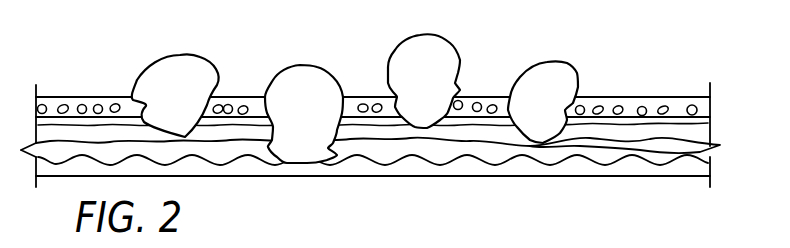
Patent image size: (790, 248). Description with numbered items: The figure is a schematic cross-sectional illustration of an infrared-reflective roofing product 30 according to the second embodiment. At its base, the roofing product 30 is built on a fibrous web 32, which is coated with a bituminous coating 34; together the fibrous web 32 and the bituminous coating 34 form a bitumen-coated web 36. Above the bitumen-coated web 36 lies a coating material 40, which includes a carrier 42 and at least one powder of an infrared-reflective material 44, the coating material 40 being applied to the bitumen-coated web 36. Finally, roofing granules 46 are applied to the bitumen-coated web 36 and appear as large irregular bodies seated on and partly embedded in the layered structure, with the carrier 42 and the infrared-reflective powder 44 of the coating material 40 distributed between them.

The infrared-reflective roofing product 30 is at (653, 35).
The fibrous web 32 is at (710, 170).
The bituminous coating 34 is at (493, 165).
The bitumen-coated web 36 is at (622, 176).
The coating material 40 is at (622, 97).
The carrier 42 is at (483, 98).
The powder of an infrared-reflective material 44 is at (235, 110).
The roofing granules 46 is at (183, 96).